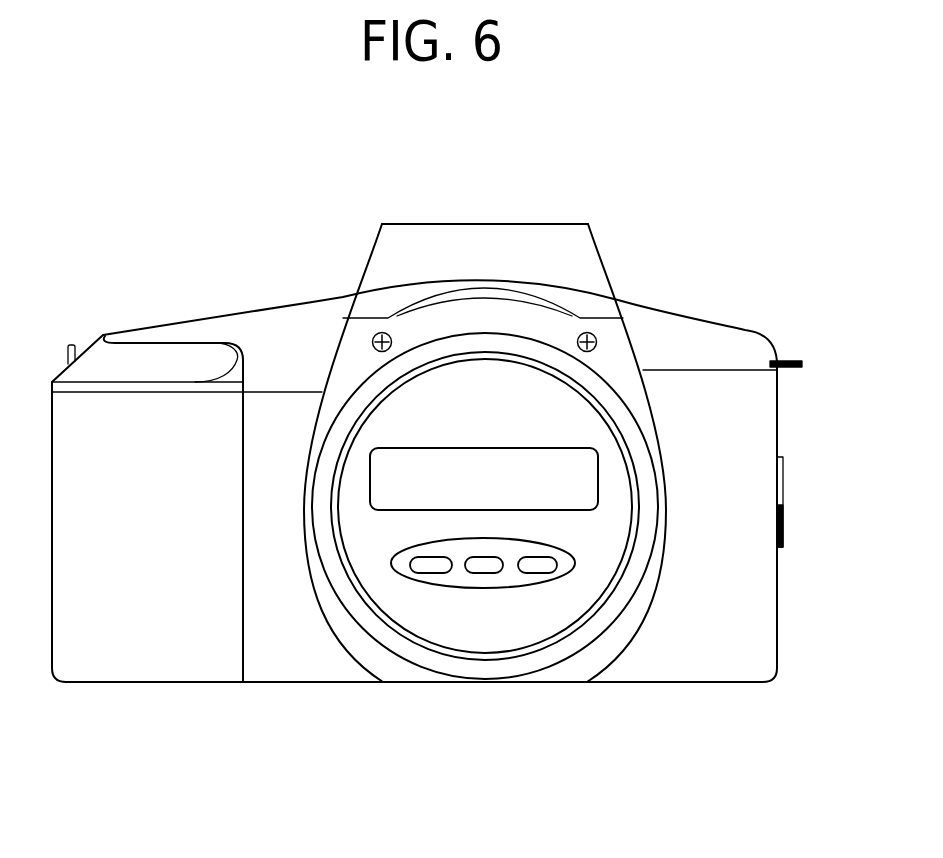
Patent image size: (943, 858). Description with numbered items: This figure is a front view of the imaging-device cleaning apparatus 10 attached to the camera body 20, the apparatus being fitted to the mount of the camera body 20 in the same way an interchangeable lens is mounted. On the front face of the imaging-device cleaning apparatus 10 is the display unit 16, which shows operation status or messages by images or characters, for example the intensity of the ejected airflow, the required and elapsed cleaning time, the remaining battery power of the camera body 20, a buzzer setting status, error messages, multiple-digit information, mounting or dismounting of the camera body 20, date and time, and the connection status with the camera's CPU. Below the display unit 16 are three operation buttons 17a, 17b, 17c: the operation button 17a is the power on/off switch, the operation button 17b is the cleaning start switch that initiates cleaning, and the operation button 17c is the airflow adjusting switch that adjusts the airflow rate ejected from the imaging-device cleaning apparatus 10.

The imaging-device cleaning apparatus 10 is at (618, 620).
The display unit 16 is at (583, 482).
The operation button 17a is at (431, 568).
The operation button 17b is at (485, 568).
The operation button 17c is at (538, 568).
The camera body 20 is at (610, 257).